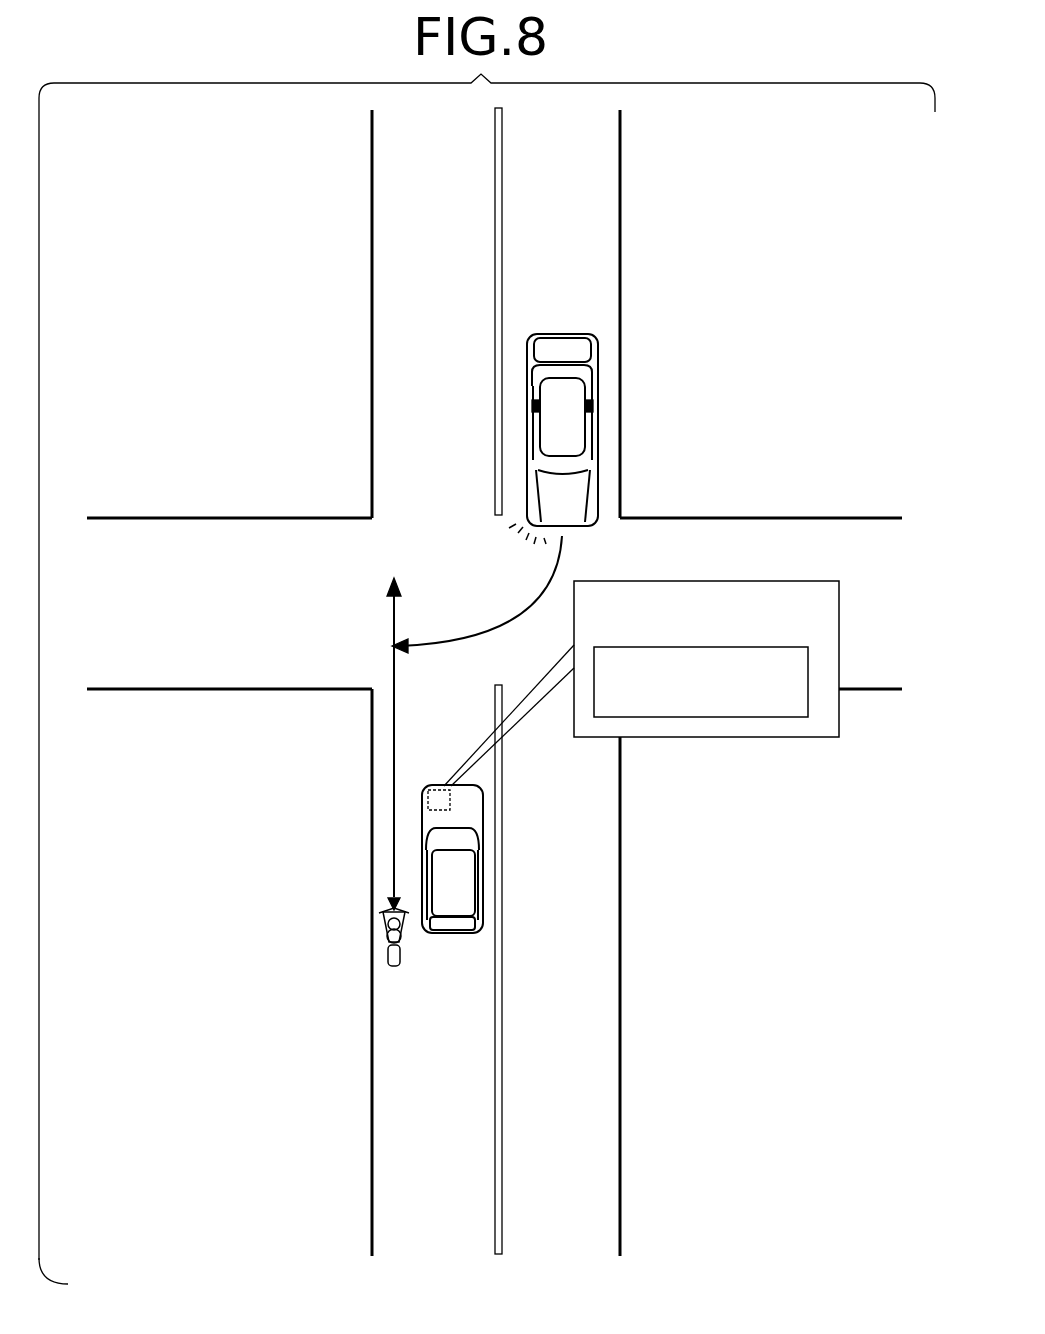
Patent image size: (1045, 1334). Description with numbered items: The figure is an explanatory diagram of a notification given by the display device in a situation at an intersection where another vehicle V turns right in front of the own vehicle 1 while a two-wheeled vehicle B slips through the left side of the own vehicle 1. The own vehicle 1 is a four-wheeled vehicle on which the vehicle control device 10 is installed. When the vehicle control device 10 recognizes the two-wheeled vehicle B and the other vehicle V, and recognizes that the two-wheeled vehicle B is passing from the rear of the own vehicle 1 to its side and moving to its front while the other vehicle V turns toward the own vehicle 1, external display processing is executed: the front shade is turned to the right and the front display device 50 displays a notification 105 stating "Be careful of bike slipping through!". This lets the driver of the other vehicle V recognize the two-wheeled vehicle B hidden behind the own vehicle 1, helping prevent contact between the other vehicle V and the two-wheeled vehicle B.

The own vehicle 1 is at (462, 888).
The vehicle control device 10 is at (428, 800).
The front display device 50 is at (800, 646).
The notification 105 is at (708, 580).
The other vehicle V is at (598, 378).
The two-wheeled vehicle B is at (382, 940).